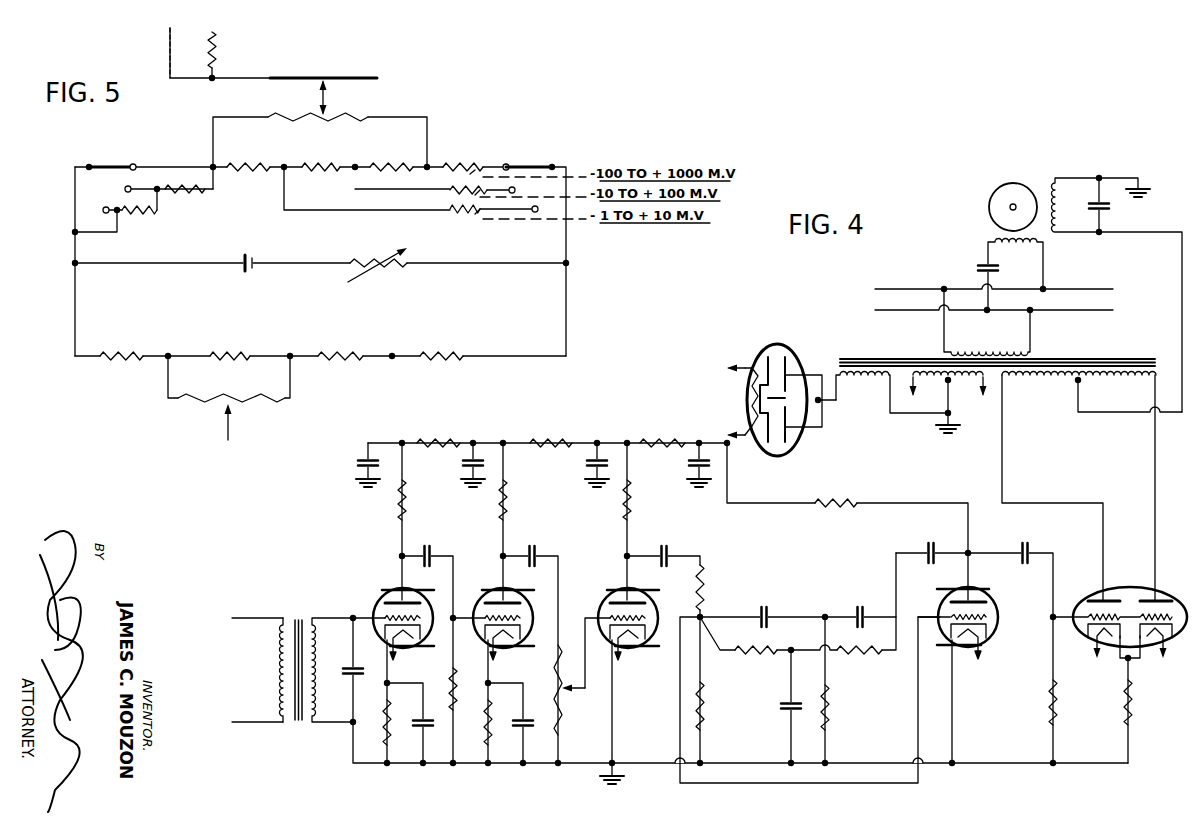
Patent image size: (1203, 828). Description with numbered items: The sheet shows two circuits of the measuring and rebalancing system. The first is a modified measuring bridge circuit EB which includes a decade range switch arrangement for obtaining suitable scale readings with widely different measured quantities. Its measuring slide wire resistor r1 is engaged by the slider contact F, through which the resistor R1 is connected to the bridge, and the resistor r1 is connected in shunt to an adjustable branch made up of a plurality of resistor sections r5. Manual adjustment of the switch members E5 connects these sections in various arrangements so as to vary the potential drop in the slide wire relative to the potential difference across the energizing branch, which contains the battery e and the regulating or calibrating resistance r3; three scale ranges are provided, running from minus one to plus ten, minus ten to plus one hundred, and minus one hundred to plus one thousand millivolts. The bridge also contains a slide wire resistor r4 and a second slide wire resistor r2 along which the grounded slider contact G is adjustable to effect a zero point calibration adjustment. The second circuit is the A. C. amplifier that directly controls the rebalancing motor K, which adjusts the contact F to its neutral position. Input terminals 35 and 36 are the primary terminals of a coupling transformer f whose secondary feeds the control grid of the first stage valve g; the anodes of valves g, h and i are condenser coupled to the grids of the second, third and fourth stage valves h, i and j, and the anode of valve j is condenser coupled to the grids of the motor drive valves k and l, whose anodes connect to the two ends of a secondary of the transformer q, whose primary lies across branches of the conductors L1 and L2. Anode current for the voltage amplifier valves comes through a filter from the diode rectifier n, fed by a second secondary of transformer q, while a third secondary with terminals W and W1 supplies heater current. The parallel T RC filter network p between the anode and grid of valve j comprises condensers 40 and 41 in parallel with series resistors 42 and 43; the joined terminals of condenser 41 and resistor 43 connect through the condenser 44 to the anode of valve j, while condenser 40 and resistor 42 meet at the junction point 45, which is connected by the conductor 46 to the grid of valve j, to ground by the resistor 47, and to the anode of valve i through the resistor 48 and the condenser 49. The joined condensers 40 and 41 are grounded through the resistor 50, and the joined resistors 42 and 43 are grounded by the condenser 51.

In FIG. 5, the resistor R1 is at (220, 42).
In FIG. 5, the slider contact F is at (326, 96).
In FIG. 5, the measuring slide wire resistor r1 is at (308, 123).
In FIG. 5, the switch members E5 is at (110, 165).
In FIG. 5, the resistor sections r5 is at (180, 197).
In FIG. 5, the bridge circuit EB is at (75, 308).
In FIG. 5, the energizing battery e is at (248, 276).
In FIG. 5, the battery calibrating resistor r3 is at (385, 270).
In FIG. 5, the slide wire resistor r4 is at (130, 356).
In FIG. 5, the second slide wire resistor r2 is at (250, 408).
In FIG. 5, the slider contact G is at (226, 417).
In FIG. 4, the rebalancing motor K is at (982, 201).
In FIG. 4, the conductor L1 is at (1105, 292).
In FIG. 4, the conductor L2 is at (1105, 312).
In FIG. 4, the transformer q is at (1080, 359).
In FIG. 4, the diode rectifier n is at (770, 350).
In FIG. 4, the terminal of third secondary winding W is at (909, 403).
In FIG. 4, the terminal of third secondary winding W1 is at (983, 397).
In FIG. 4, the input terminal 35 is at (258, 618).
In FIG. 4, the input terminal 36 is at (258, 722).
In FIG. 4, the coupling transformer f is at (298, 618).
In FIG. 4, the first stage amplifier valve g is at (385, 594).
In FIG. 4, the second stage amplifier valve h is at (518, 594).
In FIG. 4, the third stage amplifier valve i is at (612, 594).
In FIG. 4, the fourth stage amplifier valve j is at (985, 598).
In FIG. 4, the motor drive valve k is at (1086, 592).
In FIG. 4, the motor drive valve l is at (1172, 592).
In FIG. 4, the condenser 49 is at (660, 545).
In FIG. 4, the resistor 48 is at (703, 590).
In FIG. 4, the junction point 45 is at (702, 615).
In FIG. 4, the condenser 40 is at (762, 605).
In FIG. 4, the condenser 41 is at (860, 605).
In FIG. 4, the parallel T RC filter network p is at (819, 595).
In FIG. 4, the condenser 44 is at (928, 540).
In FIG. 4, the resistor 42 is at (750, 660).
In FIG. 4, the resistor 43 is at (868, 658).
In FIG. 4, the conductor 46 is at (680, 686).
In FIG. 4, the resistor 47 is at (703, 698).
In FIG. 4, the condenser 51 is at (782, 710).
In FIG. 4, the resistor 50 is at (830, 710).